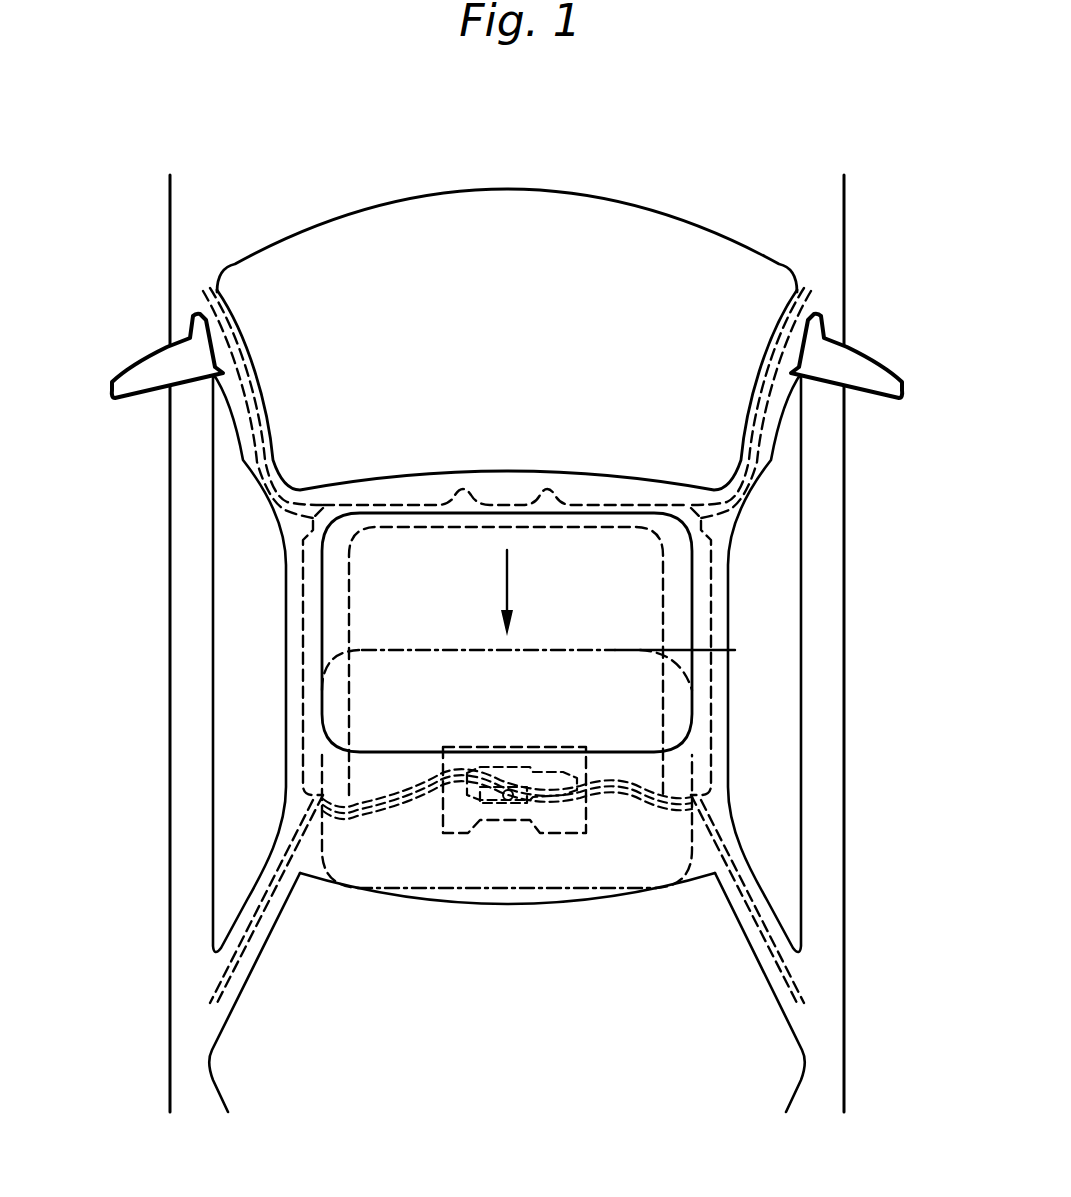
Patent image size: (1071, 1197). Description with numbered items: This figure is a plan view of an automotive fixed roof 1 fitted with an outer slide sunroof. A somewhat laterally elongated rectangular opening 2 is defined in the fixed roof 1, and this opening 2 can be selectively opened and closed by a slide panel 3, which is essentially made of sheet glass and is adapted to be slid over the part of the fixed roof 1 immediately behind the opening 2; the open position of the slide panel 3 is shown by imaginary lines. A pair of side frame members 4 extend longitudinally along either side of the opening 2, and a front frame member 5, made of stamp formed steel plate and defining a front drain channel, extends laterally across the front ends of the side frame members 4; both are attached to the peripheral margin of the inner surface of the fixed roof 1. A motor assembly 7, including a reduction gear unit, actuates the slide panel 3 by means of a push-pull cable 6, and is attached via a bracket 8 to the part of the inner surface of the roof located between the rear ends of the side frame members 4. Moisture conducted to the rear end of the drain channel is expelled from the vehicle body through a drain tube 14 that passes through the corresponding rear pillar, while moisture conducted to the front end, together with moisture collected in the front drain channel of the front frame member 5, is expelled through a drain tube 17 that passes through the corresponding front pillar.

The fixed roof 1 is at (608, 472).
The opening 2 is at (692, 583).
The slide panel 3 is at (695, 619).
The side frame members 4 is at (303, 670).
The front frame member 5 is at (417, 503).
The push-pull cable 6 is at (358, 813).
The motor assembly 7 is at (497, 820).
The bracket 8 is at (557, 835).
The drain tube 14 is at (222, 973).
The drain tube 17 is at (243, 412).